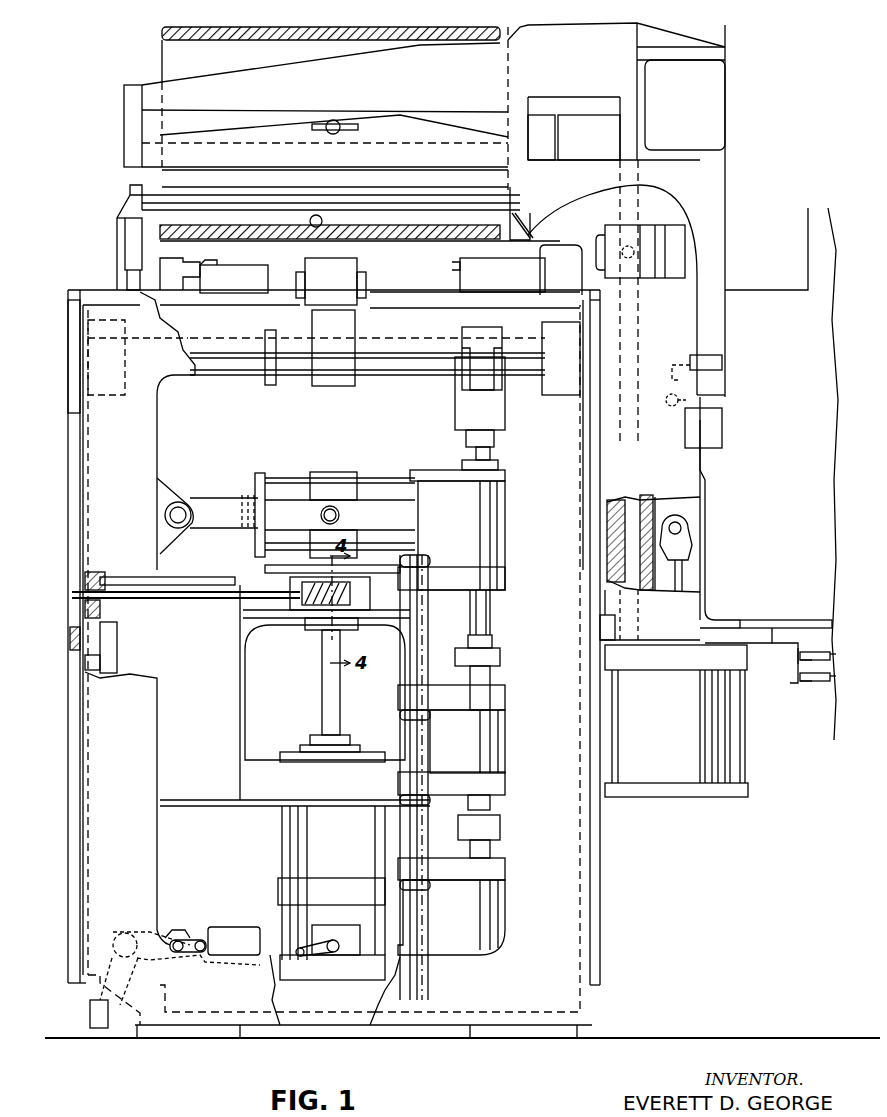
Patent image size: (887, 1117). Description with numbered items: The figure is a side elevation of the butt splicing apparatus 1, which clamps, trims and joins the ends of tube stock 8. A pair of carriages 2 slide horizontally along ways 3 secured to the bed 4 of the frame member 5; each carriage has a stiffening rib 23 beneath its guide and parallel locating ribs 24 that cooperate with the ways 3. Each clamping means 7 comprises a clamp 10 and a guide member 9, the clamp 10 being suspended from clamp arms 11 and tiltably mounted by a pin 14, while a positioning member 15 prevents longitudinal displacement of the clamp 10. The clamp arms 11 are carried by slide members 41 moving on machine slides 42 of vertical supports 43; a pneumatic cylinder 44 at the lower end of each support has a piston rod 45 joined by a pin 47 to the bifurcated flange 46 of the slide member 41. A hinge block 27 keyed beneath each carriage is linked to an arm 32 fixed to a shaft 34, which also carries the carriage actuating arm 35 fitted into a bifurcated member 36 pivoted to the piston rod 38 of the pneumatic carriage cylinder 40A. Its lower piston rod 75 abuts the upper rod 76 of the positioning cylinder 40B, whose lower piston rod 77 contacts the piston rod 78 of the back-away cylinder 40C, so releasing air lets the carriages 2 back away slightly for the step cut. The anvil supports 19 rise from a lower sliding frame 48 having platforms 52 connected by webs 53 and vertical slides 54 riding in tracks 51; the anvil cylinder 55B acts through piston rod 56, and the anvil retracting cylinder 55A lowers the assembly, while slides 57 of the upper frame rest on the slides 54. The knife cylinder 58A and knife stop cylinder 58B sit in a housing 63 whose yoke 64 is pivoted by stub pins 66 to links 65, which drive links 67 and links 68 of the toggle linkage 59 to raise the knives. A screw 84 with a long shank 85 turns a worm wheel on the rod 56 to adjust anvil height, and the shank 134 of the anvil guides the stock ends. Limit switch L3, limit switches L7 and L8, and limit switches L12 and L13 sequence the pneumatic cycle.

The butt splicing apparatus 1 is at (66, 437).
The carriage 2 is at (142, 250).
The ways 3 is at (170, 270).
The bed 4 is at (246, 302).
The frame member 5 is at (583, 400).
The clamping means 7 is at (132, 85).
The tube stock 8 is at (162, 40).
The guide member 9 is at (360, 239).
The clamp 10 is at (228, 130).
The clamp arms 11 is at (282, 27).
The pin 14 is at (337, 122).
The positioning member 15 is at (130, 212).
The anvil supports 19 is at (117, 228).
The stiffening rib 23 is at (180, 300).
The locating ribs 24 is at (280, 273).
The hinge block 27 is at (312, 296).
The arm 32 is at (328, 386).
The shaft 34 is at (402, 360).
The carriage actuating arm 35 is at (462, 332).
The bifurcated member 36 is at (458, 406).
The piston rod 38 is at (470, 450).
The pneumatic carriage cylinder 40A is at (498, 522).
The positioning cylinder 40B is at (492, 735).
The back-away cylinder 40C is at (480, 913).
The slide members 41 is at (715, 205).
The machine slides 42 is at (655, 497).
The vertical supports 43 is at (675, 343).
The pneumatic cylinder 44 is at (720, 730).
The piston rod 45 is at (680, 578).
The bifurcated flange 46 is at (688, 512).
The pin 47 is at (682, 530).
The lower sliding frame 48 is at (84, 606).
The tracks 51 is at (110, 649).
The platforms 52 is at (235, 585).
The webs 53 is at (242, 700).
The vertical slides 54 is at (88, 632).
The anvil retracting cylinder 55A is at (295, 849).
The anvil cylinder 55B is at (298, 912).
The piston rod 56 is at (326, 710).
The slides 57 is at (84, 568).
The knife cylinder 58A is at (376, 480).
The knife stop cylinder 58B is at (298, 476).
The toggle linkage 59 is at (210, 497).
The housing 63 is at (272, 478).
The yoke 64 is at (330, 486).
The links 65 is at (233, 495).
The stub pins 66 is at (340, 514).
The links 67 is at (162, 480).
The links 68 is at (168, 537).
The lower piston rod 75 is at (488, 620).
The upper rod 76 is at (494, 672).
The lower piston rod 77 is at (490, 806).
The piston rod 78 is at (484, 850).
The screw 84 is at (318, 605).
The shank 85 is at (182, 598).
The shank 134 is at (530, 230).
The limit switch L3 is at (322, 930).
The limit switch L7 is at (800, 688).
The limit switch L8 is at (800, 700).
The limit switch L12 is at (808, 652).
The limit switch L13 is at (797, 640).